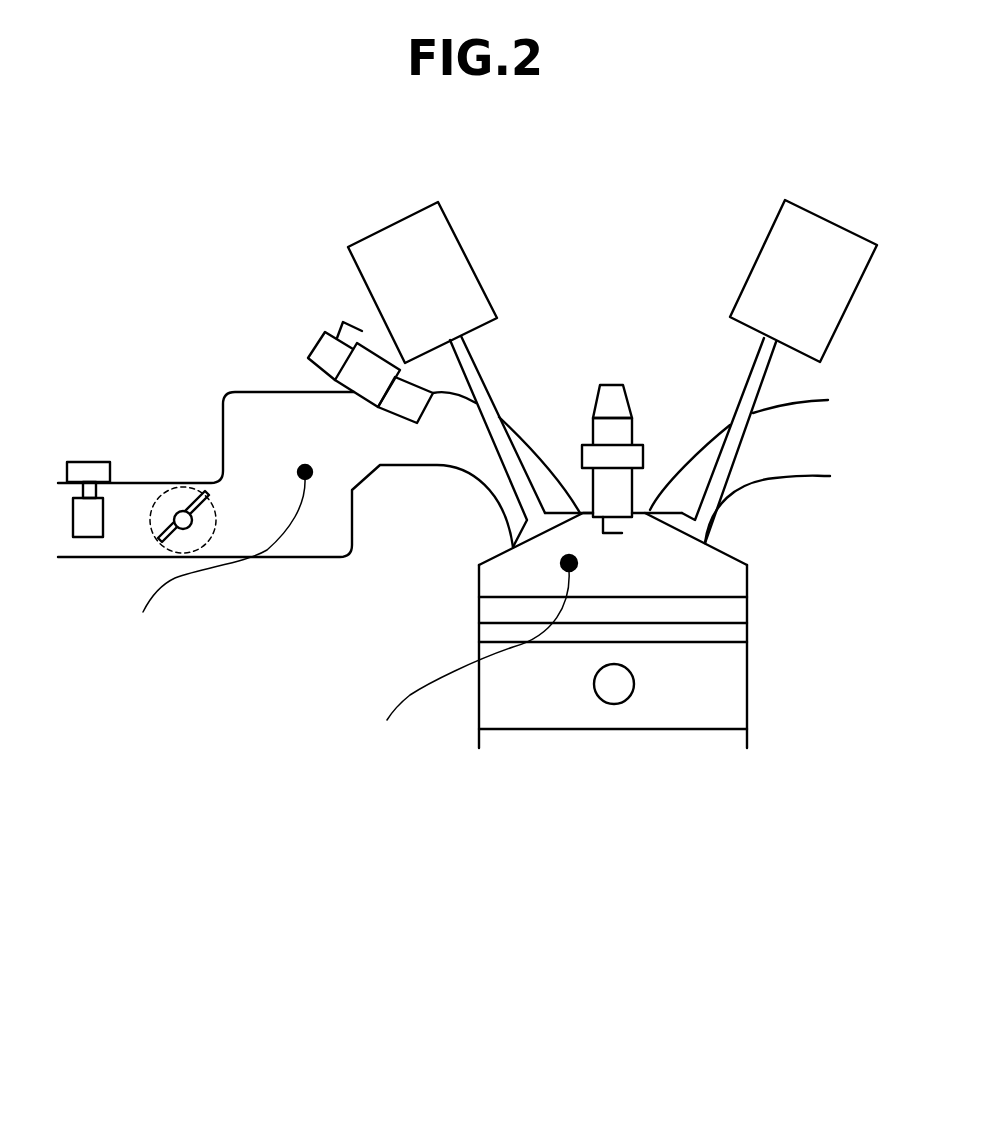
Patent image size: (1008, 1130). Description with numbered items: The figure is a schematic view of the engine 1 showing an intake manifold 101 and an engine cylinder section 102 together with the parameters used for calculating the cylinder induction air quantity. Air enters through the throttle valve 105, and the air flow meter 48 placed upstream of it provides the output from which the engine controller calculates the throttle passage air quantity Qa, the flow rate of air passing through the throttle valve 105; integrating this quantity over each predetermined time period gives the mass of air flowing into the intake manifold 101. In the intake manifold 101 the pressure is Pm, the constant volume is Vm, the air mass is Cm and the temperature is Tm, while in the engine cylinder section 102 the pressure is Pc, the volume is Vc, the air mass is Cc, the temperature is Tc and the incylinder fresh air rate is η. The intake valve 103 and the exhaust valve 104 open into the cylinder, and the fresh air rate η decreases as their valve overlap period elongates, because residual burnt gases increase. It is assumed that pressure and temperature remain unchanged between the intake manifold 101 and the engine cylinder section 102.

The internal combustion engine 1 is at (858, 397).
The air flow meter 48 is at (87, 462).
The intake manifold 101 is at (258, 392).
The engine cylinder section 102 is at (750, 653).
The intake valve 103 is at (483, 388).
The exhaust valve 104 is at (744, 386).
The throttle valve 105 is at (186, 499).